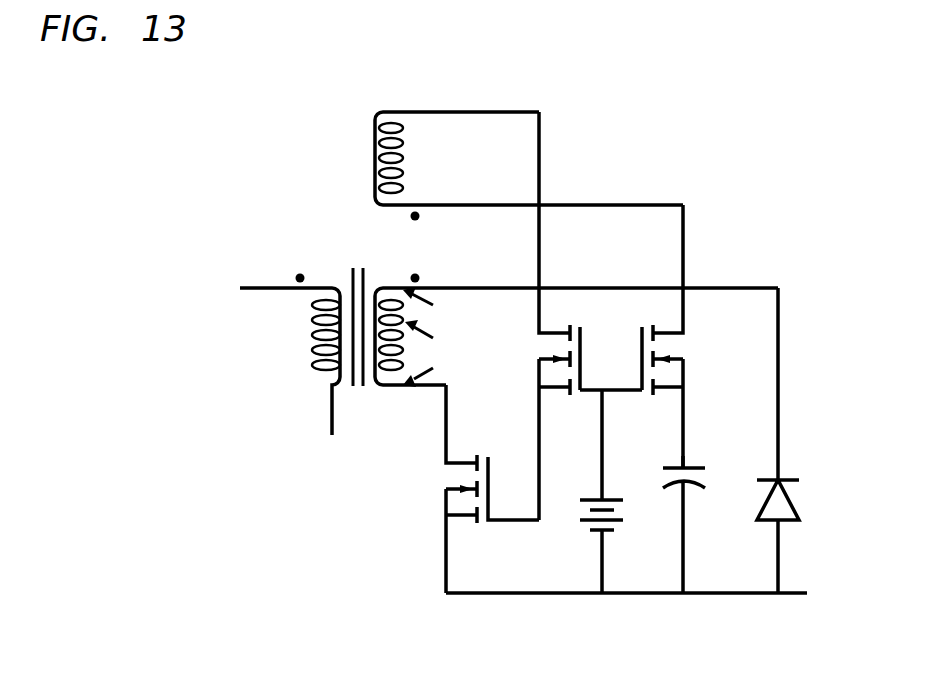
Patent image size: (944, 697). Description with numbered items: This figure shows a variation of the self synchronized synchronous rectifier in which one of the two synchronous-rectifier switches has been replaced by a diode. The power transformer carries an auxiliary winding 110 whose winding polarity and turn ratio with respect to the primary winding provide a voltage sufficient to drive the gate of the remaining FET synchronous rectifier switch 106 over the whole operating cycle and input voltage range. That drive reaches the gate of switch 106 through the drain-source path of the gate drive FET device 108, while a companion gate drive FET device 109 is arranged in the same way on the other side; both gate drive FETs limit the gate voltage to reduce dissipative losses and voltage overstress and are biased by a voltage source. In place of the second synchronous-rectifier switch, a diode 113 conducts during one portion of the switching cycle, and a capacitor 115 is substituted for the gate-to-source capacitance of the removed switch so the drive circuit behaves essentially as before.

The FET synchronous rectifier switch 106 is at (446, 500).
The gate drive FET device 108 is at (539, 372).
The gate drive FET device 109 is at (684, 370).
The auxiliary winding 110 is at (403, 157).
The diode 113 is at (798, 512).
The capacitor 115 is at (680, 467).